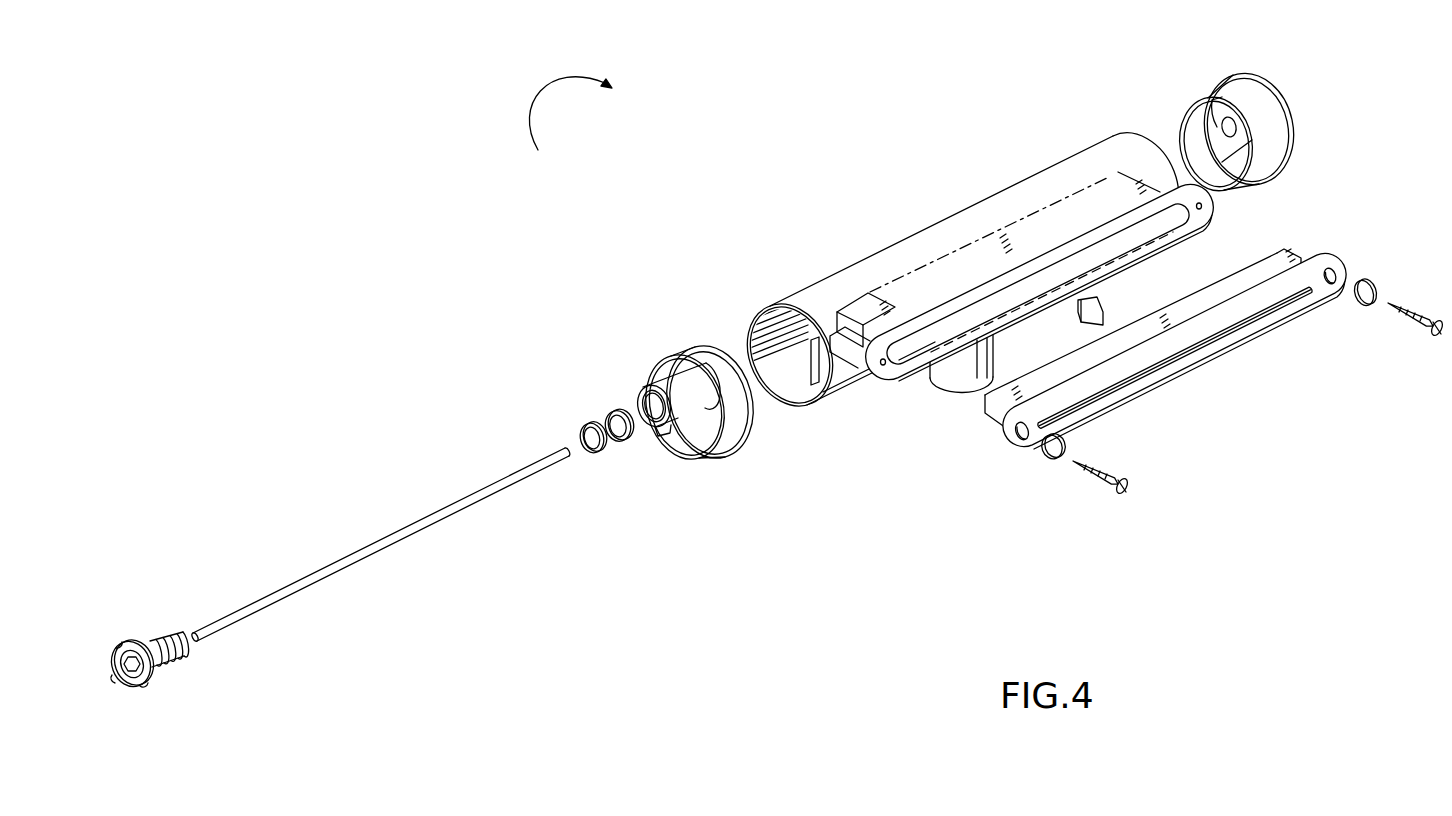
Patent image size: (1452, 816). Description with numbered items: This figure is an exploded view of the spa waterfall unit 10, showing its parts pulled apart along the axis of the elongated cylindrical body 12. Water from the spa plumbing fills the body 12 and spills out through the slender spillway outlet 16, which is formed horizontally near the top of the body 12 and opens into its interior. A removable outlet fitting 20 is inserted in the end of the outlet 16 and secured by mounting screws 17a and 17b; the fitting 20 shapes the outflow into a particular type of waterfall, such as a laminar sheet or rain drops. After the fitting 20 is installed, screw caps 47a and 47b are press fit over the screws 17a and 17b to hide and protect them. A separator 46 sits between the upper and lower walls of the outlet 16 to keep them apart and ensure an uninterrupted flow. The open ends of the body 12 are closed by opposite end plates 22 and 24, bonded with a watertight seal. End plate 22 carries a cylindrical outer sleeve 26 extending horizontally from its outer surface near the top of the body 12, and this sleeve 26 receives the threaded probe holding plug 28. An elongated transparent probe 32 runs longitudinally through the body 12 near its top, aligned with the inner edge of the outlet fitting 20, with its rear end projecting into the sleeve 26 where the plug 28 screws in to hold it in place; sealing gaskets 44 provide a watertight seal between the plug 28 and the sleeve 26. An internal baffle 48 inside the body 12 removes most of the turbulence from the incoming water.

The waterfall unit 10 is at (570, 130).
The elongated cylindrical body 12 is at (915, 232).
The spillway outlet 16 is at (1050, 233).
The outlet fitting 20 is at (1002, 449).
The end plate 22 is at (674, 353).
The end plate 24 is at (1280, 108).
The cylindrical outer sleeve 26 is at (680, 398).
The probe holding plug 28 is at (1189, 116).
The transparent probe 32 is at (367, 543).
The sealing gaskets 44 is at (615, 412).
The separator 46 is at (1098, 300).
The screw cap 47a is at (1044, 461).
The screw cap 47b is at (1370, 281).
The mounting screw 17a is at (1103, 470).
The mounting screw 17b is at (1405, 320).
The internal baffle 48 is at (803, 375).